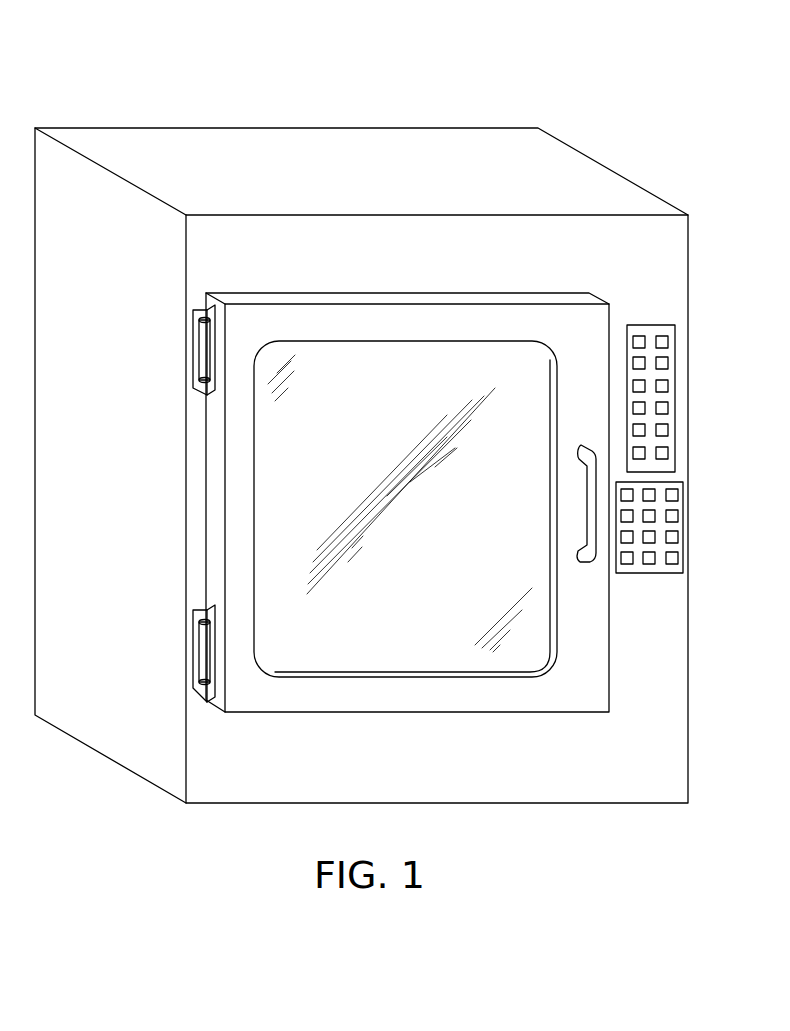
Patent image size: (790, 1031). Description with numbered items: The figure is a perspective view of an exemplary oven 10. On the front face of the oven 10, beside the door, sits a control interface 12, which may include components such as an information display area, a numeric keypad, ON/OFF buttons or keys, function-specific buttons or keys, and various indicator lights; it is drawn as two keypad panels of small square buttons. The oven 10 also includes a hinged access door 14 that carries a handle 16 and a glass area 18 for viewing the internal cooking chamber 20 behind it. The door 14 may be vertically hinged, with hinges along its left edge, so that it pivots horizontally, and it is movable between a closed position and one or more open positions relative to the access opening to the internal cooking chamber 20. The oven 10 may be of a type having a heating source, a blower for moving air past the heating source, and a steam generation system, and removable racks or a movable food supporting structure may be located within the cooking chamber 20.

The oven 10 is at (361, 407).
The control interface 12 is at (685, 325).
The hinged access door 14 is at (218, 519).
The handle 16 is at (586, 445).
The glass area 18 is at (557, 622).
The internal cooking chamber 20 is at (405, 545).